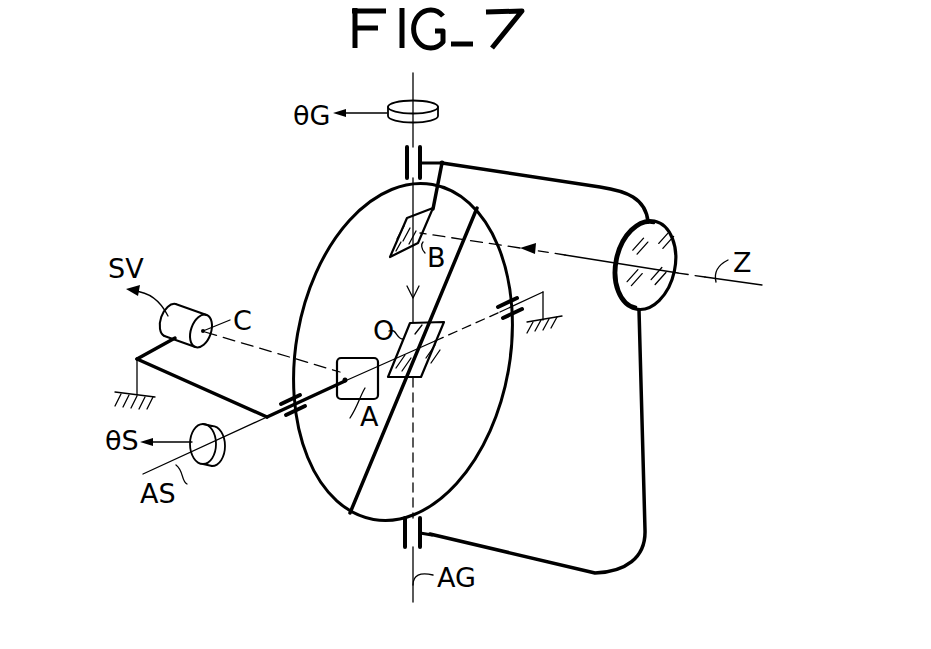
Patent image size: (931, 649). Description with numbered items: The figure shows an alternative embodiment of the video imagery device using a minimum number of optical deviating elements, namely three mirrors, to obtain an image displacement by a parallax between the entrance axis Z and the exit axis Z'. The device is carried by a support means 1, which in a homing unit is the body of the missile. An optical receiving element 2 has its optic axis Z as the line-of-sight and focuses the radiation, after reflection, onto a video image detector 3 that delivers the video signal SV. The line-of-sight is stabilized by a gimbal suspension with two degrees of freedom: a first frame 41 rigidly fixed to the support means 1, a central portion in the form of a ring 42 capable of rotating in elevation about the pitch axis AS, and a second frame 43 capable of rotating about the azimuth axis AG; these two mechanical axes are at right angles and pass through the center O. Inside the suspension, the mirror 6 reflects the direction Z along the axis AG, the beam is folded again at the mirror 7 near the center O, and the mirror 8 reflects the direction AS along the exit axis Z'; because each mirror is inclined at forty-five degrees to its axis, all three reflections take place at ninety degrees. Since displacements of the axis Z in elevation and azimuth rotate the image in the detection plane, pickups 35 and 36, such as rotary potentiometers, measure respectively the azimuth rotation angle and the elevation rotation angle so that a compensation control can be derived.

The support means 1 is at (132, 379).
The optical receiving element 2 is at (657, 235).
The video image detector 3 is at (186, 307).
The mirror 6 is at (403, 236).
The mirror 7 is at (424, 364).
The mirror 8 is at (343, 358).
The pickup 35 is at (222, 459).
The pickup 36 is at (442, 118).
The first frame 41 is at (212, 363).
The ring 42 is at (482, 441).
The second frame 43 is at (530, 172).